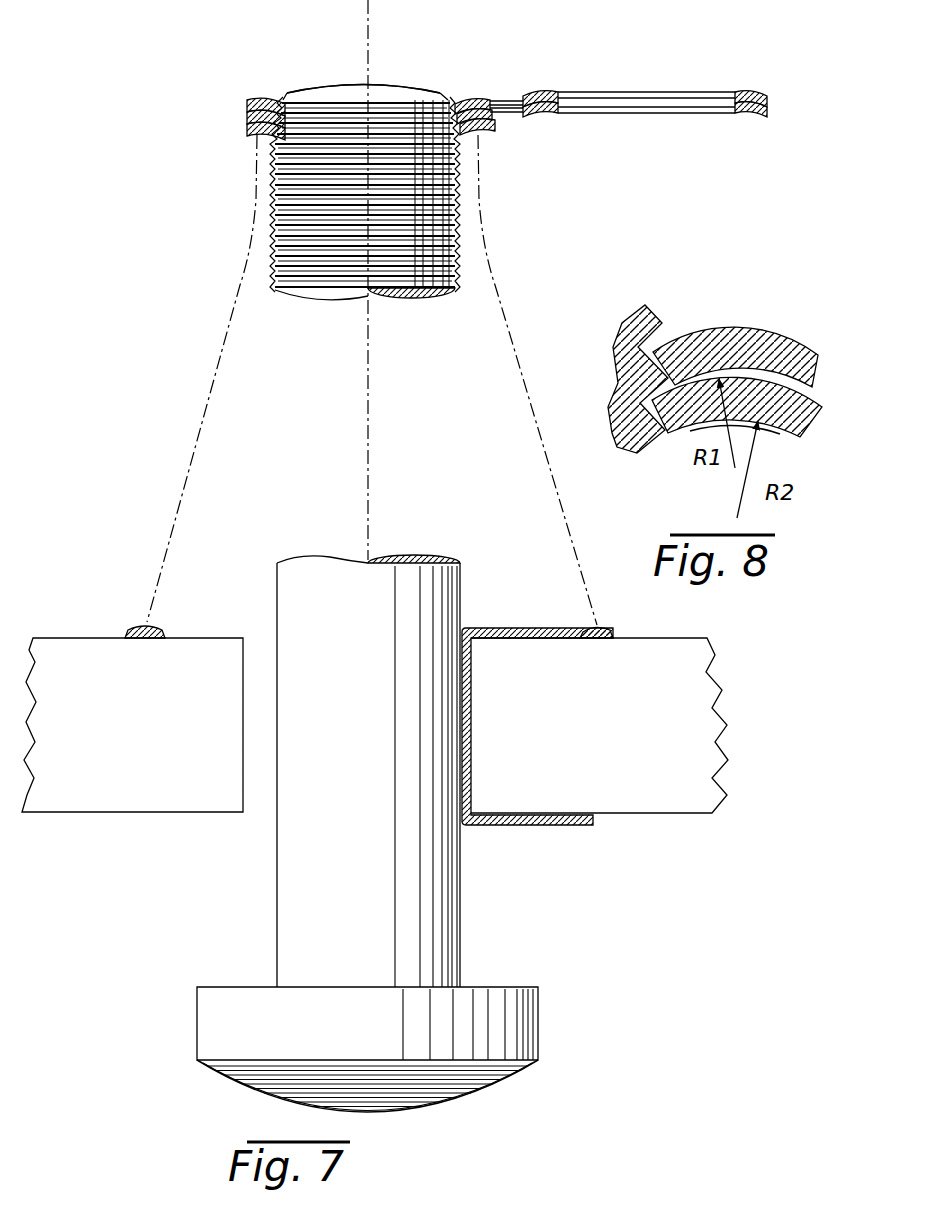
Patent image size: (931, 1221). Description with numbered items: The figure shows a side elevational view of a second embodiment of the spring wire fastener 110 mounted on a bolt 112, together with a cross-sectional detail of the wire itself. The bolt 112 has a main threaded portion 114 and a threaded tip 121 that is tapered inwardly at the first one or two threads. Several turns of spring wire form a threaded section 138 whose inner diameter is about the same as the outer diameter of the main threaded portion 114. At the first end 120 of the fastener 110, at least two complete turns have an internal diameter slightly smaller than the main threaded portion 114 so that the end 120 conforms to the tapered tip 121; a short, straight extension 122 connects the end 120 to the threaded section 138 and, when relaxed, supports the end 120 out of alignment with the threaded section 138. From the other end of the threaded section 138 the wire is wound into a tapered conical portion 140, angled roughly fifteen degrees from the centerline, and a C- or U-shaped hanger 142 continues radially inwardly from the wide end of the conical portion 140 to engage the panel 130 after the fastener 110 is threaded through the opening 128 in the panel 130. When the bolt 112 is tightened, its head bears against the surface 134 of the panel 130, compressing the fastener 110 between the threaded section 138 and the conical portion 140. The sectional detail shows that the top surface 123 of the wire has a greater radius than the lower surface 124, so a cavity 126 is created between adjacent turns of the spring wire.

In FIG. 7, the spring wire fastener 110 is at (508, 135).
In FIG. 7, the bolt 112 is at (457, 583).
In FIG. 7, the main threaded portion 114 is at (455, 209).
In FIG. 8, the main threaded portion 114 is at (658, 323).
In FIG. 7, the first end 120 is at (555, 93).
In FIG. 7, the threaded tip 121 is at (348, 85).
In FIG. 7, the extension 122 is at (498, 100).
In FIG. 8, the top surface 123 is at (805, 405).
In FIG. 8, the lower surface 124 is at (788, 433).
In FIG. 8, the cavity 126 is at (740, 370).
In FIG. 7, the opening 128 is at (262, 660).
In FIG. 7, the panel 130 is at (113, 773).
In FIG. 7, the surface 134 is at (155, 812).
In FIG. 7, the threaded section 138 is at (228, 98).
In FIG. 7, the conical portion 140 is at (213, 257).
In FIG. 7, the hanger 142 is at (498, 628).